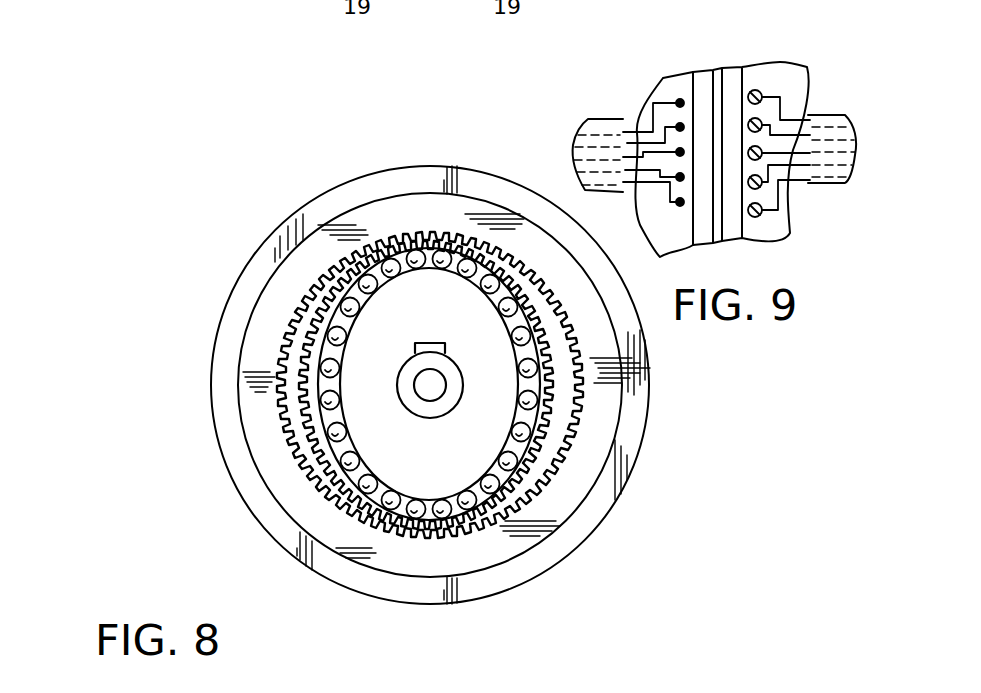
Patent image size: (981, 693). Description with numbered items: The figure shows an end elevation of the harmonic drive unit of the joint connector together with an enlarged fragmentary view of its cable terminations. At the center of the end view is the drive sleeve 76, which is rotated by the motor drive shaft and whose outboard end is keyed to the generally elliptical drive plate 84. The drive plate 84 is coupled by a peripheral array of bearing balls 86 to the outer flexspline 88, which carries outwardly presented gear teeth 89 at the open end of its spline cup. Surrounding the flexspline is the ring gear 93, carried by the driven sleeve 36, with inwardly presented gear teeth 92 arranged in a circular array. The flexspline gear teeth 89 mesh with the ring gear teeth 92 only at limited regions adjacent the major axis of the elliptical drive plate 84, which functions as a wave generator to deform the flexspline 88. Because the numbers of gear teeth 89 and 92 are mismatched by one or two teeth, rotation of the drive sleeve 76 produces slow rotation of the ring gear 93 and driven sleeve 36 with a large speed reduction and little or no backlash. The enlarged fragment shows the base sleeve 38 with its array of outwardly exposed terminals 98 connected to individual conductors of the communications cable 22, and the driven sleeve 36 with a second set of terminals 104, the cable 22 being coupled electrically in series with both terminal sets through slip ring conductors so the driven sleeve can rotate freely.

In FIG. 9, the communications cable 22 is at (605, 118).
In FIG. 8, the driven sleeve 36 is at (466, 174).
In FIG. 9, the driven sleeve 36 is at (665, 80).
In FIG. 9, the base sleeve 38 is at (760, 72).
In FIG. 8, the drive sleeve 76 is at (412, 404).
In FIG. 8, the drive plate 84 is at (429, 384).
In FIG. 8, the bearing balls 86 is at (506, 468).
In FIG. 8, the flexspline 88 is at (540, 382).
In FIG. 8, the gear teeth 89 is at (543, 338).
In FIG. 8, the gear teeth 92 is at (440, 228).
In FIG. 8, the ring gear 93 is at (485, 228).
In FIG. 9, the terminals 98 is at (767, 180).
In FIG. 9, the terminals 104 is at (677, 152).